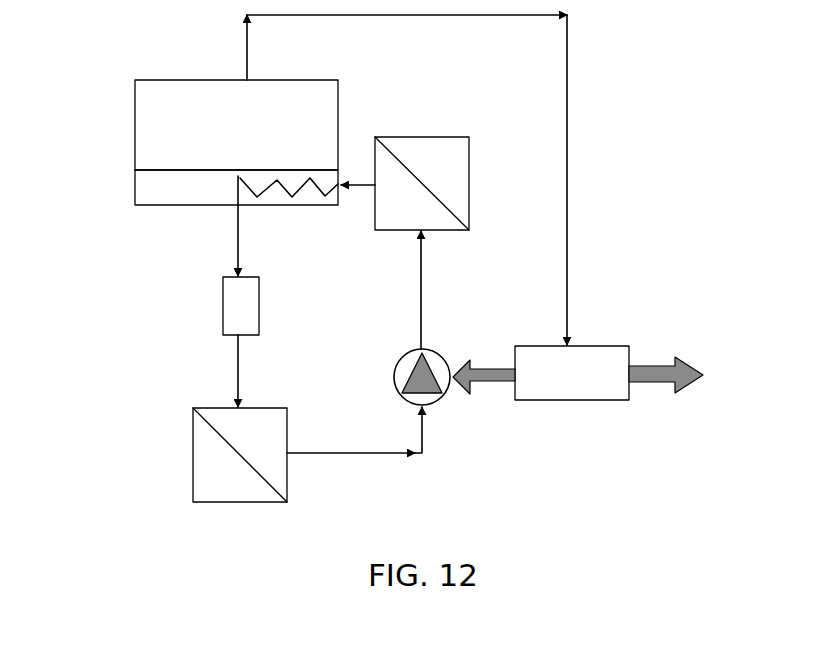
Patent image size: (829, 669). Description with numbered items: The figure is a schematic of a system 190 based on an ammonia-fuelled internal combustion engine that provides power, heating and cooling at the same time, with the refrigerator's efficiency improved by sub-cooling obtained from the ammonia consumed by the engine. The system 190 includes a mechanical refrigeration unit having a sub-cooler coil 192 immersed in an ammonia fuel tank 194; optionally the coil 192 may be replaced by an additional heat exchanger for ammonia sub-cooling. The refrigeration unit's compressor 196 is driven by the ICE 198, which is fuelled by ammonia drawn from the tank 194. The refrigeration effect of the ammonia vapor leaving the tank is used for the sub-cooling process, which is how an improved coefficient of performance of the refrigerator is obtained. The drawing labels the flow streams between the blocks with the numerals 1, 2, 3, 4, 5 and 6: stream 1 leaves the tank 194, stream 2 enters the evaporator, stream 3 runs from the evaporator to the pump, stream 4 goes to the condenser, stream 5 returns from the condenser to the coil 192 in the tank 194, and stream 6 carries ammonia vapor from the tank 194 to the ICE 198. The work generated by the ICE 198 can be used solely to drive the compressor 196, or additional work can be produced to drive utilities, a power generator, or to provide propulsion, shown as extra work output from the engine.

The system 190 is at (138, 331).
The sub-cooler coil 192 is at (305, 180).
The ammonia fuel tank 194 is at (250, 132).
The compressor 196 is at (246, 487).
The ICE 198 is at (580, 390).
The stream 1 (liquid ammonia from tank) 1 is at (220, 226).
The stream 2 (to evaporator) 2 is at (217, 371).
The stream 3 (evaporator outlet to pump) 3 is at (354, 430).
The stream 4 (pump outlet to condenser) 4 is at (407, 290).
The stream 5 (condenser outlet to tank coil) 5 is at (358, 167).
The stream 6 (tank vapor to ICE) 6 is at (407, 180).